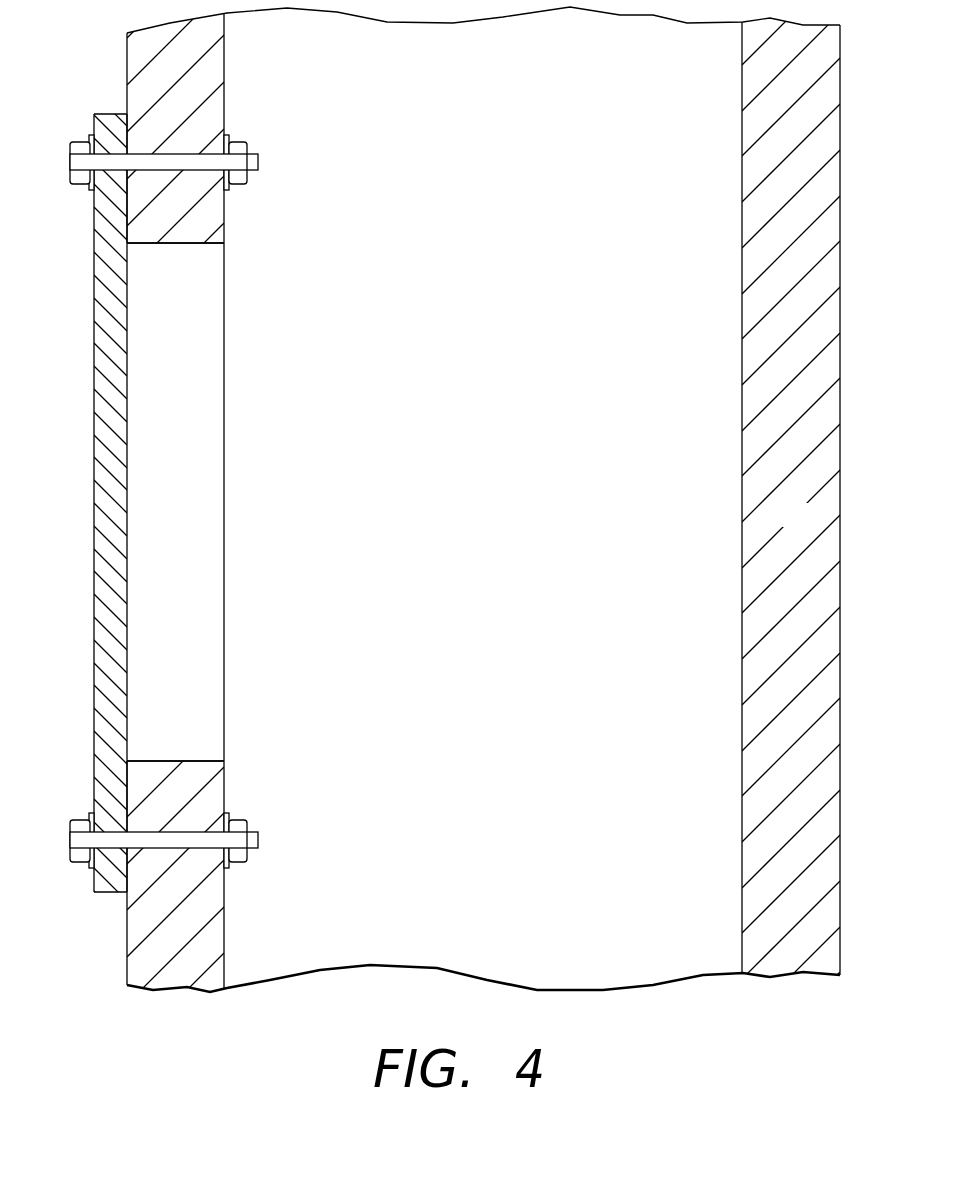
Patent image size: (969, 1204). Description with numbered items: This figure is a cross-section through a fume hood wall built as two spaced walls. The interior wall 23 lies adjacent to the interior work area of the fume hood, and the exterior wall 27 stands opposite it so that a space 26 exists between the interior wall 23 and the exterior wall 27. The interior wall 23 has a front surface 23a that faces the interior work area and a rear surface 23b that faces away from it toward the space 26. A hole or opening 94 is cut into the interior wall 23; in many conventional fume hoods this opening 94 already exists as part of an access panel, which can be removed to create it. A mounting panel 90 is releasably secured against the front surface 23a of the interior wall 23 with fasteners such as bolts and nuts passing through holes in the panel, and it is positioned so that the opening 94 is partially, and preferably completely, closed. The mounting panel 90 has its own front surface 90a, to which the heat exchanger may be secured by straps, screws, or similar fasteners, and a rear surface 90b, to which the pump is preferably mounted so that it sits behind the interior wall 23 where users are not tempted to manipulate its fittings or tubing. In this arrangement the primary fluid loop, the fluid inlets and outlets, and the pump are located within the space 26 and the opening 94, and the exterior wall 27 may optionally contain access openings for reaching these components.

The interior wall 23 is at (182, 548).
The front surface 23a is at (127, 70).
The rear surface 23b is at (225, 52).
The space 26 is at (492, 770).
The exterior wall 27 is at (807, 526).
The mounting panel 90 is at (112, 508).
The front surface of mounting panel 90a is at (94, 634).
The rear surface of mounting panel 90b is at (127, 634).
The opening 94 is at (183, 528).